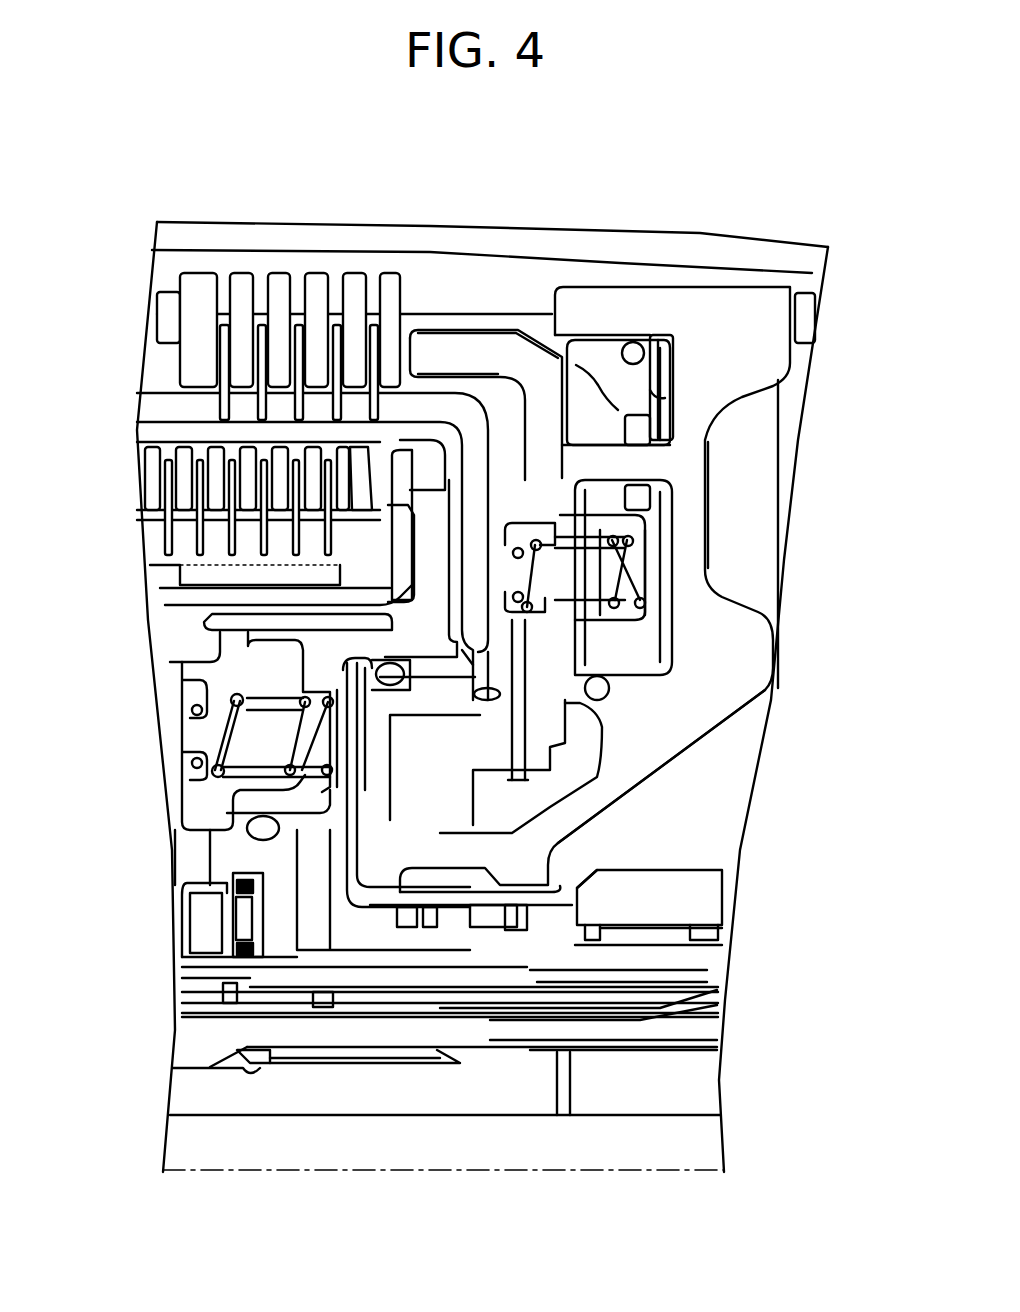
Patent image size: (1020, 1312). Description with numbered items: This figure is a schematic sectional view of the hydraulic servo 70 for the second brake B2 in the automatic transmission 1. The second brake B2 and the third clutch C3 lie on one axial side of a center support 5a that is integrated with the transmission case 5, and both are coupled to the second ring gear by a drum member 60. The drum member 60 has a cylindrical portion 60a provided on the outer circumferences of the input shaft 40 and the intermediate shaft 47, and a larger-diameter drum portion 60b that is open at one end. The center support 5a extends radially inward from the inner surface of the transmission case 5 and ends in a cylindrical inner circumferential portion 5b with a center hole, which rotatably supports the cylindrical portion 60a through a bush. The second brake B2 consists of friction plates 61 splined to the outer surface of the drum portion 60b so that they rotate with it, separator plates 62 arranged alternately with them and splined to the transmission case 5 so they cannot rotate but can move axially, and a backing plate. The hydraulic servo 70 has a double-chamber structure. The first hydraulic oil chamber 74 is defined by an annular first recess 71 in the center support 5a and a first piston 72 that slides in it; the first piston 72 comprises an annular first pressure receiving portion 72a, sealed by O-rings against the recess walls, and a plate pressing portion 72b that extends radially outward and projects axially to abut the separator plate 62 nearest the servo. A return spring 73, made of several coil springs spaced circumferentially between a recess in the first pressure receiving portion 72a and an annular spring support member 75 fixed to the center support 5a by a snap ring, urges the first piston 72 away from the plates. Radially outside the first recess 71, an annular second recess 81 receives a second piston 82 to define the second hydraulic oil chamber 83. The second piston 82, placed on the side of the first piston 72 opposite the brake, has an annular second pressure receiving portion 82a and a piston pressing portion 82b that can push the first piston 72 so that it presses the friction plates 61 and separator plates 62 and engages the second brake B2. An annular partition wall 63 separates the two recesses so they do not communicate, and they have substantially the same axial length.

The automatic transmission 1 is at (777, 190).
The transmission case 5 is at (515, 240).
The center support 5a is at (767, 652).
The inner circumferential portion 5b is at (545, 880).
The input shaft 40 is at (180, 1050).
The intermediate shaft 47 is at (705, 1087).
The drum member 60 is at (210, 845).
The cylindrical portion 60a is at (710, 970).
The drum portion 60b is at (145, 433).
The friction plates 61 is at (297, 273).
The separator plates 62 is at (240, 273).
The partition wall 63 is at (540, 483).
The hydraulic servo 70 is at (662, 737).
The first recess 71 is at (650, 578).
The first piston 72 is at (588, 471).
The first pressure receiving portion 72a is at (655, 640).
The plate pressing portion 72b is at (433, 345).
The return spring 73 is at (538, 580).
The first hydraulic oil chamber 74 is at (660, 516).
The spring support member 75 is at (497, 730).
The second recess 81 is at (668, 398).
The second piston 82 is at (599, 376).
The second pressure receiving portion 82a is at (642, 382).
The piston pressing portion 82b is at (580, 362).
The second hydraulic oil chamber 83 is at (675, 357).
The second brake B2 is at (303, 408).
The third clutch C3 is at (125, 497).